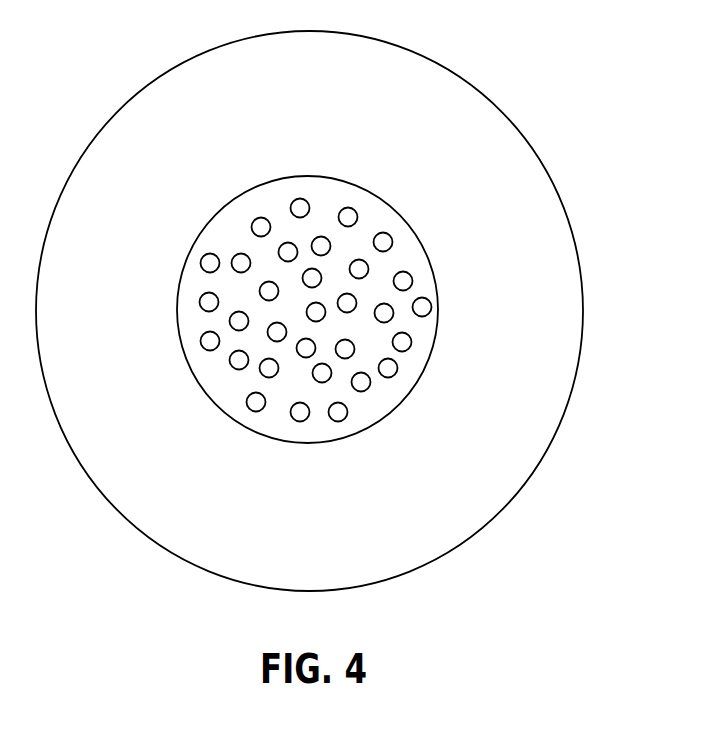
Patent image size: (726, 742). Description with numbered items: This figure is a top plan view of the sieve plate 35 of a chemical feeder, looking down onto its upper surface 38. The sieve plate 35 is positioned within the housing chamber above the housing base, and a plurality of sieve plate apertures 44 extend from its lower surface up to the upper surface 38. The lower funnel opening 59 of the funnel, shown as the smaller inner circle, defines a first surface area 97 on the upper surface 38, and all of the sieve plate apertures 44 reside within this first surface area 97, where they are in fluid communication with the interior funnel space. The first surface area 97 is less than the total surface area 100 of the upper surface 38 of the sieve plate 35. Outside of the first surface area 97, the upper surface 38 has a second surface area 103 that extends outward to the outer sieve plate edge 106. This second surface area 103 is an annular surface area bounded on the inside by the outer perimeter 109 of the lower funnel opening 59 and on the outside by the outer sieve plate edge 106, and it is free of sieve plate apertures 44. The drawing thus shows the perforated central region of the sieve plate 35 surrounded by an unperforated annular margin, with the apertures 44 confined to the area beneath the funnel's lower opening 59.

The sieve plate 35 is at (483, 528).
The upper surface 38 is at (553, 412).
The sieve plate apertures 44 is at (383, 242).
The lower funnel opening 59 is at (333, 443).
The first surface area 97 is at (421, 367).
The total surface area 100 is at (325, 583).
The second surface area 103 is at (131, 354).
The outer sieve plate edge 106 is at (583, 303).
The outer perimeter 109 is at (233, 420).